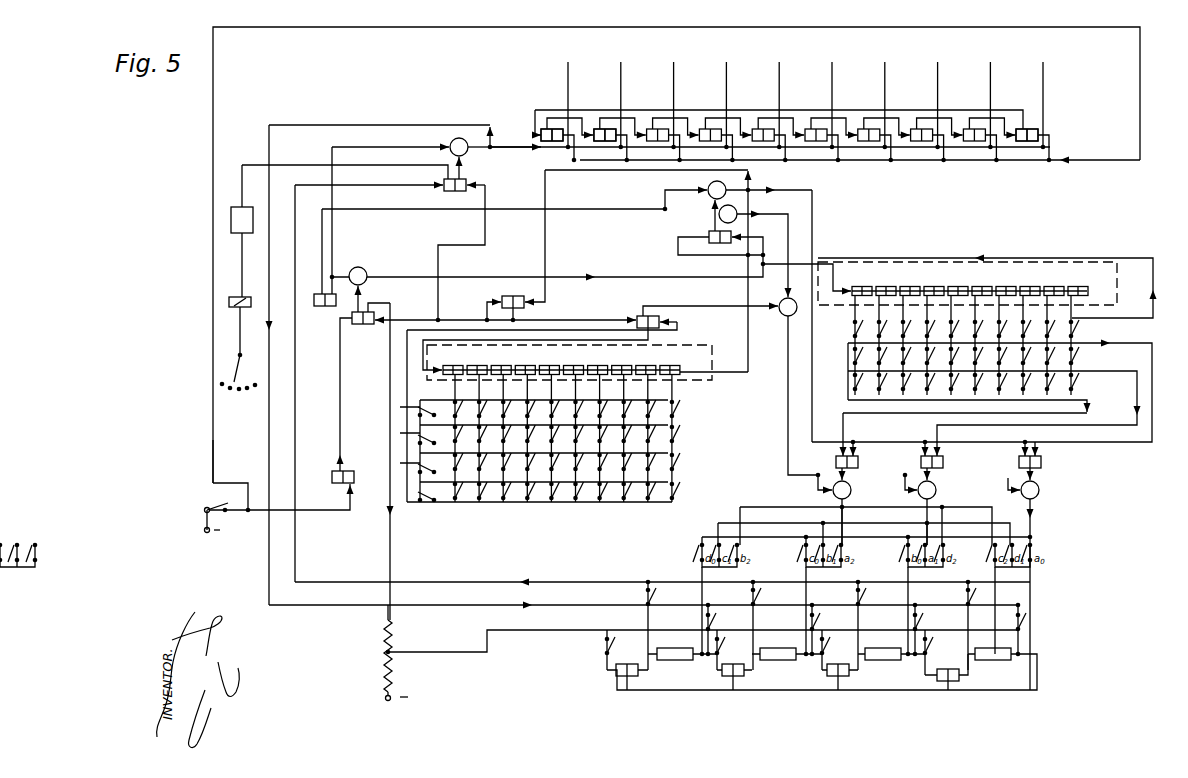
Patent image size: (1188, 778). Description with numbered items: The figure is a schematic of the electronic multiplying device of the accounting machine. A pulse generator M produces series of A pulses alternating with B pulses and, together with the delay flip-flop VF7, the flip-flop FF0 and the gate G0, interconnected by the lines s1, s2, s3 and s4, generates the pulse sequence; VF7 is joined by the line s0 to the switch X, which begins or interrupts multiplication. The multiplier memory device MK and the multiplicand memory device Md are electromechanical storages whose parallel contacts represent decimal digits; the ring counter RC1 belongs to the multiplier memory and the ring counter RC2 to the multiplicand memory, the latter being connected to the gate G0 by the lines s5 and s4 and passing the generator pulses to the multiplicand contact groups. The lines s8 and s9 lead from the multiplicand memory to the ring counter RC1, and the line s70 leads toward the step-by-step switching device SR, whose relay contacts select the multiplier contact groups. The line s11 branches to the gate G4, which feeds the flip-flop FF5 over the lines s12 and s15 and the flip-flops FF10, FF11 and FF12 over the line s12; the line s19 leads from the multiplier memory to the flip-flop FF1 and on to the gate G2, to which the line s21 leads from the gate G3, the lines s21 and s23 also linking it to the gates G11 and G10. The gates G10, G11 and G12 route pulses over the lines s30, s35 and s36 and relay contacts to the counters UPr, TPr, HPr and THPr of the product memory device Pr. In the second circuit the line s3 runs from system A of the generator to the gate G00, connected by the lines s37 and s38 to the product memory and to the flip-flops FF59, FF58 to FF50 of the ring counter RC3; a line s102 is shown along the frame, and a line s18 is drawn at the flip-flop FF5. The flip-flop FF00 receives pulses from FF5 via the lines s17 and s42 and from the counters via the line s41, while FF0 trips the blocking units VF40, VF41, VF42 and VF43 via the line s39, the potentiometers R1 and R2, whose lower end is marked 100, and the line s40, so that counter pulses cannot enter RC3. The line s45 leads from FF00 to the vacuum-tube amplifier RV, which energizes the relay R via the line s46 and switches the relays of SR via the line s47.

The gate G00 is at (412, 150).
The flip-flop FF00 is at (390, 181).
The vacuum-tube amplifier RV is at (244, 199).
The relay R is at (241, 294).
The step-by-step switching device SR is at (239, 394).
The pulse generator M is at (323, 304).
The gate G0 is at (366, 273).
The flip-flop FF0 is at (356, 391).
The delay flip-flop VF7 is at (337, 485).
The flip-flop FF5 is at (517, 301).
The flip-flop FF1 is at (707, 324).
The gate G4 is at (752, 187).
The gate G3 is at (752, 246).
The gate G2 is at (786, 301).
The gate G12 is at (855, 513).
The gate G11 is at (921, 509).
The gate G10 is at (1022, 581).
The flip-flop FF12 is at (848, 468).
The flip-flop FF11 is at (934, 468).
The flip-flop FF10 is at (1034, 468).
The ring counter RC3 is at (815, 125).
The ring counter RC2 is at (967, 316).
The ring counter RC1 is at (581, 423).
The multiplier memory device MK is at (565, 467).
The multiplicand memory device Md is at (995, 389).
The product memory device Pr is at (828, 641).
The counter THPr is at (674, 663).
The counter HPr is at (778, 663).
The counter TPr is at (883, 663).
The counter UPr is at (993, 663).
The blocking unit VF40 is at (946, 675).
The blocking unit VF41 is at (840, 678).
The blocking unit VF42 is at (734, 678).
The blocking unit VF43 is at (632, 678).
The resistor R1 is at (375, 630).
The potentiometer R2 is at (373, 678).
The supply terminal 100 is at (417, 698).
The switch X is at (215, 511).
The flip-flop FF59 is at (552, 140).
The flip-flop FF58 is at (605, 140).
The flip-flop FF50 is at (1042, 136).
The line s0 is at (282, 507).
The line s1 is at (340, 394).
The line s2 is at (373, 299).
The line s3 is at (494, 250).
The line s4 is at (546, 220).
The line s5 is at (806, 278).
The line s8 is at (987, 280).
The line s9 is at (723, 271).
The line s11 is at (672, 198).
The line s12 is at (824, 316).
The line s15 is at (636, 238).
The line s17 is at (505, 314).
The line s18 is at (479, 307).
The line s19 is at (542, 412).
The line s21 is at (798, 365).
The line s23 is at (801, 488).
The line s30 is at (867, 543).
The line s35 is at (864, 533).
The line s36 is at (866, 525).
The line s37 is at (515, 140).
The line s38 is at (643, 367).
The line s39 is at (379, 556).
The line s40 is at (703, 641).
The line s41 is at (662, 598).
The line s42 is at (475, 252).
The line s45 is at (345, 164).
The line s46 is at (254, 265).
The line s47 is at (250, 344).
The line s70 is at (721, 236).
The line s102 is at (229, 461).